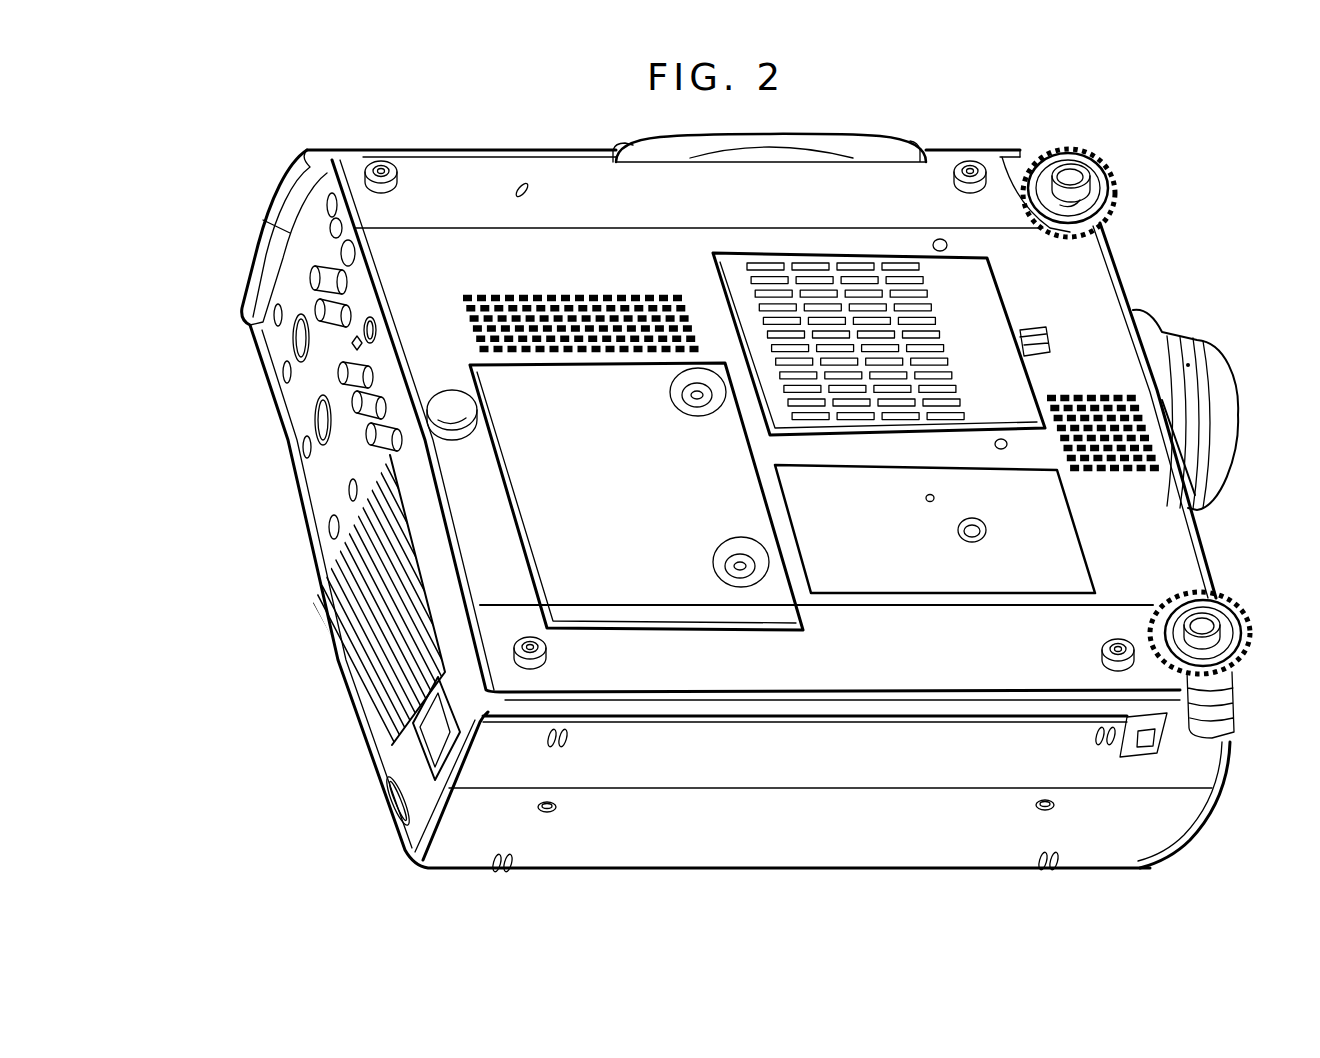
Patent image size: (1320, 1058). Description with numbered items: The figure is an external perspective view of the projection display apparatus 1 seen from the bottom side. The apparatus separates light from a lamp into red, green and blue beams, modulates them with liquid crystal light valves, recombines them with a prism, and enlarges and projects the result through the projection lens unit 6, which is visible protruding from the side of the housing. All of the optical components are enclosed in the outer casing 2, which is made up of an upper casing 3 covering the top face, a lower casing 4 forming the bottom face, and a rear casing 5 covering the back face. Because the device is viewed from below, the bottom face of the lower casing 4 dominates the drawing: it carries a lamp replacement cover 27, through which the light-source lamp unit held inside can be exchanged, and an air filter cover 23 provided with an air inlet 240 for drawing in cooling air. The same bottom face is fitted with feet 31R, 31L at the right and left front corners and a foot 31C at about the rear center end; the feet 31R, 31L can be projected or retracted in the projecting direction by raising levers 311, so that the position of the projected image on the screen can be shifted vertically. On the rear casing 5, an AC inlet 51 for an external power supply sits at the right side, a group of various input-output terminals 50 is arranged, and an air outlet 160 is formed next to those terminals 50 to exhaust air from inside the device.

The projection display apparatus 1 is at (212, 212).
The outer casing 2 is at (282, 770).
The upper casing 3 is at (477, 870).
The lower casing 4 is at (537, 763).
The rear casing 5 is at (443, 836).
The projection lens unit 6 is at (1220, 386).
The air filter cover 23 is at (962, 270).
The air inlet 240 is at (848, 305).
The lamp replacement cover 27 is at (643, 582).
The foot 31R is at (1097, 165).
The foot 31L is at (1232, 641).
The foot 31C is at (456, 414).
The lever 311 is at (1041, 148).
The input-output terminals 50 is at (340, 430).
The AC inlet 51 is at (447, 730).
The air outlet 160 is at (368, 622).